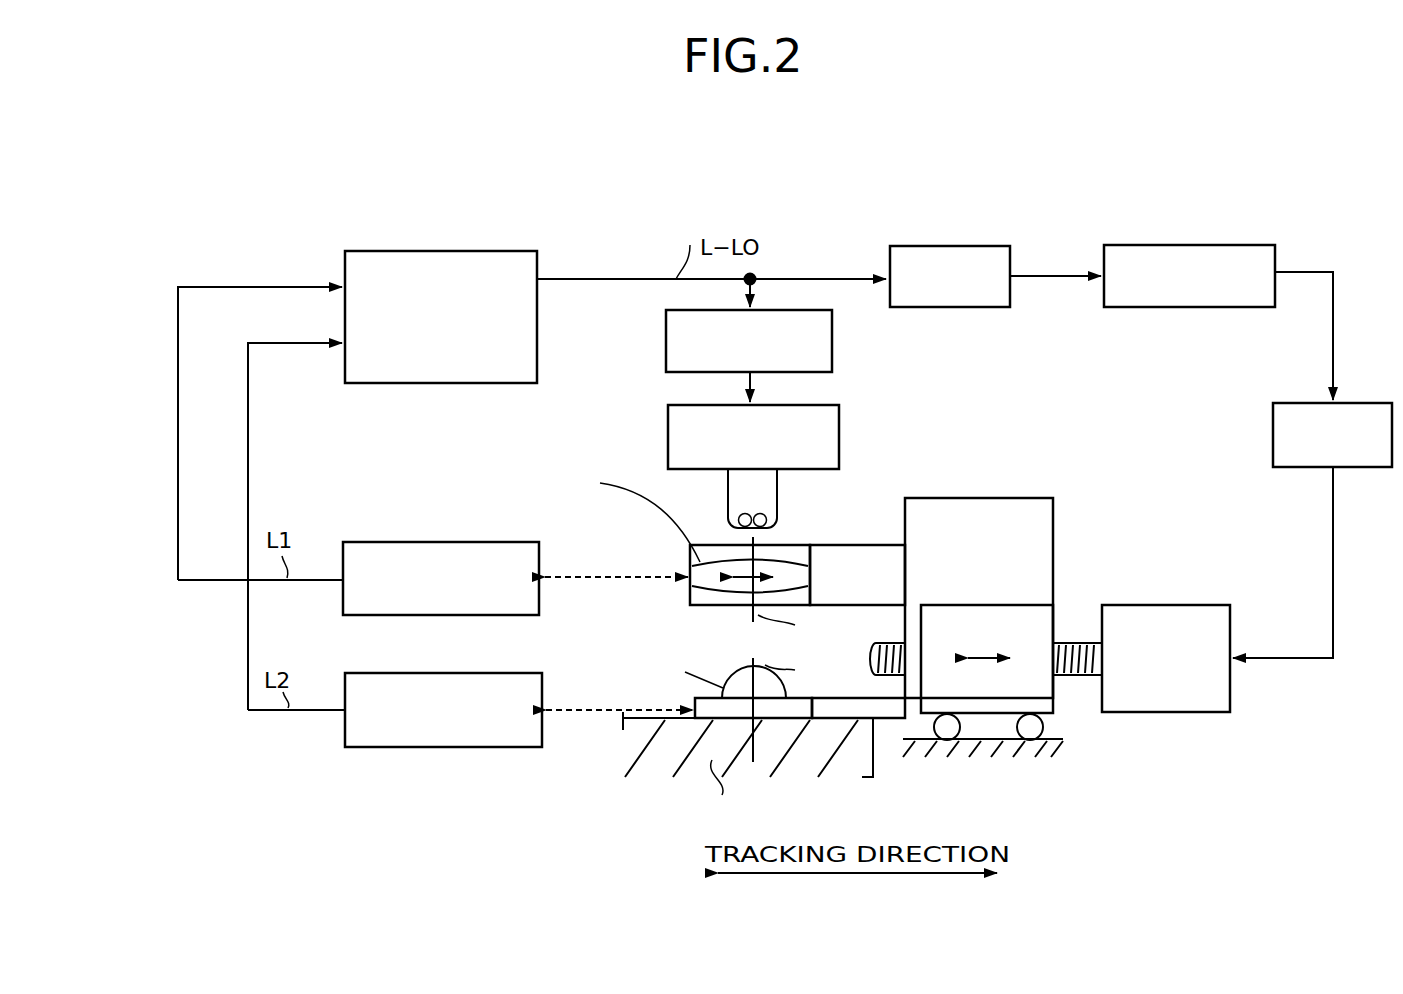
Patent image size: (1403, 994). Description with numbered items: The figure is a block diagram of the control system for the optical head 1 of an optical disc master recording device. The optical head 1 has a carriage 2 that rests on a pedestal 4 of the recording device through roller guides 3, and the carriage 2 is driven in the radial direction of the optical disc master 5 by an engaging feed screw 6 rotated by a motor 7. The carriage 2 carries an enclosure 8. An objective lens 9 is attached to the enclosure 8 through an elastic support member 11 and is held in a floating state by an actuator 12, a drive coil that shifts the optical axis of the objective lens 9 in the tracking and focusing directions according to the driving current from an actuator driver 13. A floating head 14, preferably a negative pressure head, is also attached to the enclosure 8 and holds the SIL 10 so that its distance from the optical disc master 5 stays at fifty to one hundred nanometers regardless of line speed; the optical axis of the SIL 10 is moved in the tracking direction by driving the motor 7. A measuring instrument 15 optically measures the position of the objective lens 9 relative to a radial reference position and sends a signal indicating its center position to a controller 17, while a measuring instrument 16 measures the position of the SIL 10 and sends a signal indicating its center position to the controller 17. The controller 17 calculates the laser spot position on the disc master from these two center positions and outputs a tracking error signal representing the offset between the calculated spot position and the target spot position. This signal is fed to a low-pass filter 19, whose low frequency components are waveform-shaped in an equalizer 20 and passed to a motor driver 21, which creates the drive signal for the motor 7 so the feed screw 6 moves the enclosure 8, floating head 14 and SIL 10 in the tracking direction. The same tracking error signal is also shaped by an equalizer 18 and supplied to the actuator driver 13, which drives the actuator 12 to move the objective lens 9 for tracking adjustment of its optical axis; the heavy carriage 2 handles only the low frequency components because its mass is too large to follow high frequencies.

The optical head 1 is at (980, 433).
The carriage 2 is at (1025, 613).
The roller guides 3 is at (1043, 722).
The pedestal 4 is at (1047, 748).
The optical disc master 5 is at (862, 743).
The feed screw 6 is at (1080, 643).
The motor 7 is at (1180, 605).
The enclosure 8 is at (1010, 500).
The objective lens 9 is at (787, 562).
The SIL 10 is at (738, 677).
The support member 11 is at (880, 543).
The actuator 12 is at (770, 516).
The actuator driver 13 is at (839, 425).
The floating head 14 is at (716, 710).
The measuring instrument 15 is at (454, 541).
The measuring instrument 16 is at (459, 672).
The controller 17 is at (465, 252).
The equalizer 18 is at (832, 360).
The low-pass filter 19 is at (960, 246).
The equalizer 20 is at (1174, 245).
The motor driver 21 is at (1370, 402).